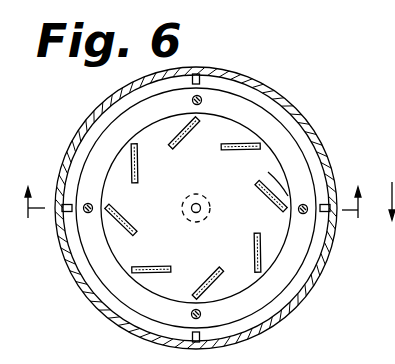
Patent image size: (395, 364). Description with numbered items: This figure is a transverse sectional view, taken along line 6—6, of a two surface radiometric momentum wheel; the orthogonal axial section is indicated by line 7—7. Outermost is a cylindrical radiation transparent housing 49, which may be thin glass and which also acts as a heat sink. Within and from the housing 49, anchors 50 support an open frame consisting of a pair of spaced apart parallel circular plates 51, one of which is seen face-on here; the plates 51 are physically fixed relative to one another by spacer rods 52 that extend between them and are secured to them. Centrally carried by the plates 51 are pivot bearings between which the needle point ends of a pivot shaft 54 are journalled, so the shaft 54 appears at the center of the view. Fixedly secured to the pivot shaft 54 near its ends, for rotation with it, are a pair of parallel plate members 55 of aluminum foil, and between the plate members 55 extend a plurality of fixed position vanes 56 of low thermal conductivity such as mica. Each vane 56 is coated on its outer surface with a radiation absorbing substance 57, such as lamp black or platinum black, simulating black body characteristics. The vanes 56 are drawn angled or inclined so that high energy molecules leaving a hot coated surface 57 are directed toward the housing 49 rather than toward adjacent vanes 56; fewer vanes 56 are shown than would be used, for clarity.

The cylindrical radiation transparent housing 49 is at (313, 282).
The anchors 50 is at (196, 77).
The circular plates 51 is at (275, 288).
The spacer rods 52 is at (203, 100).
The pivot shaft 54 is at (201, 208).
The parallel plate members 55 is at (268, 172).
The vanes 56 is at (242, 149).
The radiation absorbing substance 57 is at (226, 141).
The section line 7— 7 is at (197, 189).
The section line 6— 6 is at (389, 214).